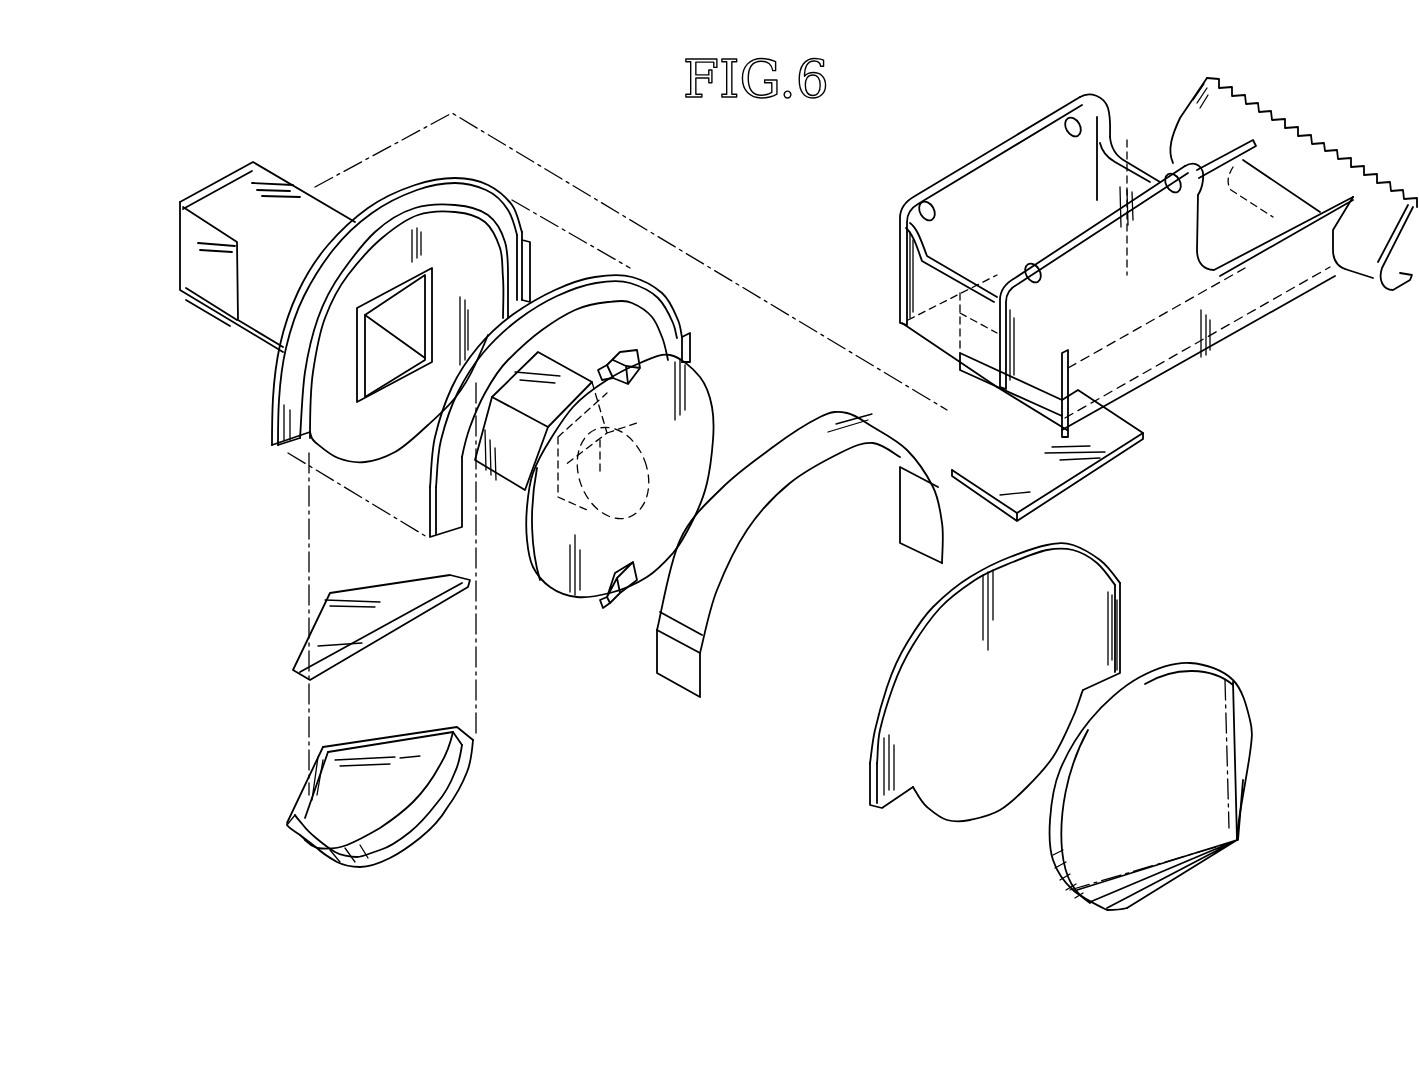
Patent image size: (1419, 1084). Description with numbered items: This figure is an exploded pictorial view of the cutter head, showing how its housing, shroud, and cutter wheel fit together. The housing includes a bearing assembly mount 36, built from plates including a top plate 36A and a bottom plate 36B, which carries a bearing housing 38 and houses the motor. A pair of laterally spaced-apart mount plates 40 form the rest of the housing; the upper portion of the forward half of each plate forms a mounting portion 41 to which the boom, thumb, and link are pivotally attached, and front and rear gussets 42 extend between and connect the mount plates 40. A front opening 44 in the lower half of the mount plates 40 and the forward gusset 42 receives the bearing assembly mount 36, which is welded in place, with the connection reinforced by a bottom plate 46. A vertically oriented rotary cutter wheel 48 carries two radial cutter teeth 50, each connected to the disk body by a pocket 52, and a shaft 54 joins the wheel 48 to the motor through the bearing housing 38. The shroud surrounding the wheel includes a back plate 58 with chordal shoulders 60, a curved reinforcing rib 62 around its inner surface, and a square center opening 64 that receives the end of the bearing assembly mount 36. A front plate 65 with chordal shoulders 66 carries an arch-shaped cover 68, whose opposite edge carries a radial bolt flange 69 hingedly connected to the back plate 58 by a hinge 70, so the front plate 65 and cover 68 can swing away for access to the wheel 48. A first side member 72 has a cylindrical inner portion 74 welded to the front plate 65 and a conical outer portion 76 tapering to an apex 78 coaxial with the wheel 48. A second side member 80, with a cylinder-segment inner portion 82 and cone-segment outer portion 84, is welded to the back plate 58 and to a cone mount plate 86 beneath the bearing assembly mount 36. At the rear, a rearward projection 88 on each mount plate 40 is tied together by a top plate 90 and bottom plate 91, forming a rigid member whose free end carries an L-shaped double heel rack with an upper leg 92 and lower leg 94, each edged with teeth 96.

The bearing assembly mount 36 is at (250, 347).
The top plate 36A is at (267, 178).
The bottom plate 36B is at (198, 310).
The bearing housing 38 is at (280, 285).
The mount plates 40 is at (1022, 262).
The mounting portion 41 is at (1083, 107).
The gussets 42 is at (950, 267).
The front opening 44 is at (920, 340).
The bottom plate 46 is at (1128, 465).
The rotary cutter wheel 48 is at (594, 490).
The cutter teeth 50 is at (630, 343).
The pocket 52 is at (643, 387).
The shaft 54 is at (542, 497).
The back plate 58 is at (505, 360).
The chordal shoulders 60 is at (283, 447).
The curved reinforcing rib 62 is at (313, 403).
The square center opening 64 is at (388, 367).
The front plate 65 is at (941, 706).
The chordal shoulders 66 is at (897, 797).
The arch-shaped cover 68 is at (670, 698).
The radial bolt flange 69 is at (632, 257).
The hinge 70 is at (530, 270).
The first side member 72 is at (1149, 764).
The cylindrical inner portion 74 is at (1050, 822).
The conical outer portion 76 is at (1057, 880).
The apex 78 is at (1237, 840).
The second side member 80 is at (375, 818).
The inner portion 82 is at (303, 847).
The outer portion 84 is at (298, 807).
The cone mount plate 86 is at (301, 606).
The rearward projection 88 is at (1317, 293).
The top plate 90 is at (1043, 380).
The bottom plate 91 is at (1007, 397).
The upper leg 92 is at (1190, 110).
The lower leg 94 is at (1390, 287).
The teeth 96 is at (1277, 120).